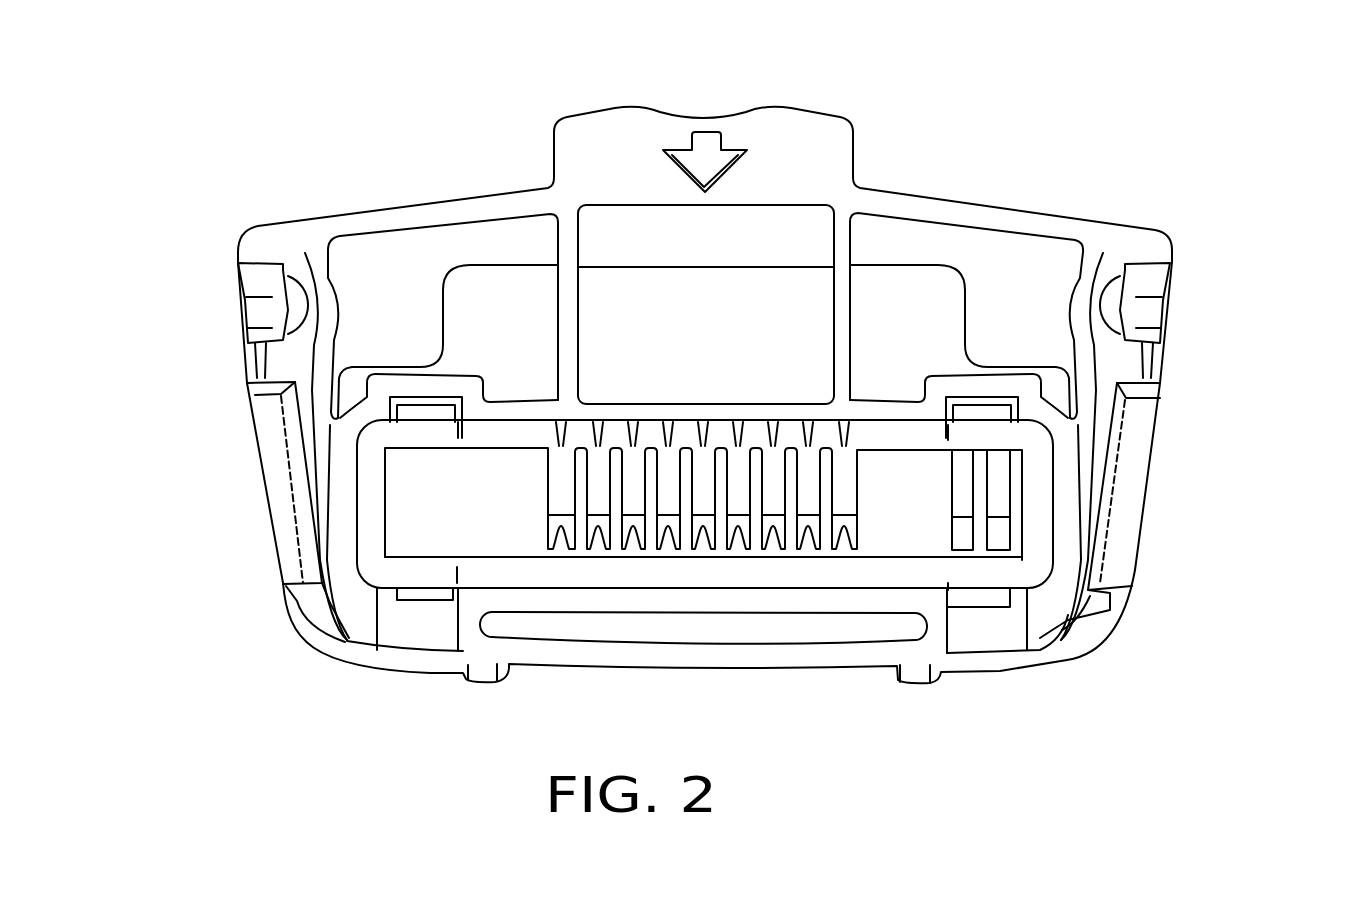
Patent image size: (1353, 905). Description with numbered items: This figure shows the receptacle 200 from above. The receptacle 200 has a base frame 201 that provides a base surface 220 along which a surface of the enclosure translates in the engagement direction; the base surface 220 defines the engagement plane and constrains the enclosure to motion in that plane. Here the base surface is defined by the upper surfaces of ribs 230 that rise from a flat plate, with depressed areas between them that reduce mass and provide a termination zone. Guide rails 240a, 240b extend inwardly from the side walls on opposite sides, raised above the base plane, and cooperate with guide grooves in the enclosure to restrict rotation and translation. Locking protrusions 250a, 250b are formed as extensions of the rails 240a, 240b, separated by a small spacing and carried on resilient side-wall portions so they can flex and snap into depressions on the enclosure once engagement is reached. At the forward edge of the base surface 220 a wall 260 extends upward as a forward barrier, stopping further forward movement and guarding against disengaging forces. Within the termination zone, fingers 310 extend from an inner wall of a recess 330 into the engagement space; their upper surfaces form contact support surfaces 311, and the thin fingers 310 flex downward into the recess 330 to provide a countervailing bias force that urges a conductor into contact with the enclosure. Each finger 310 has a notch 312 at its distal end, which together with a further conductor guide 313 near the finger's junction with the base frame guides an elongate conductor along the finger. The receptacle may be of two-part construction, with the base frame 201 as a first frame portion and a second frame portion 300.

The receptacle 200 is at (1246, 65).
The base frame 201 is at (328, 225).
The base surface 220 is at (1028, 223).
The ribs 230 is at (835, 234).
The locking protrusion 250a is at (290, 307).
The locking protrusion 250b is at (1117, 307).
The guide rail 240a is at (275, 508).
The guide rail 240b is at (1127, 490).
The second frame portion 300 is at (387, 572).
The fingers 310 is at (843, 497).
The contact support surfaces 311 is at (858, 477).
The notch 312 is at (857, 543).
The conductor guide 313 is at (742, 430).
The recess 330 is at (515, 548).
The wall 260 is at (1010, 667).